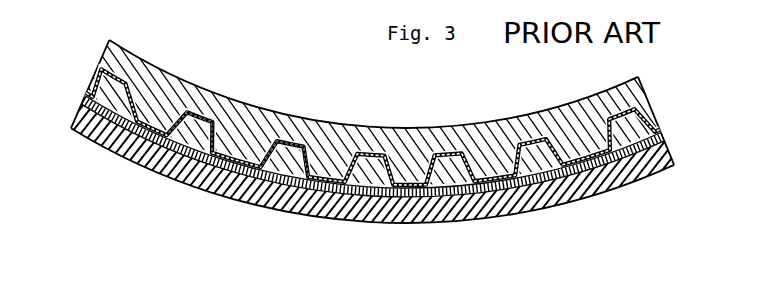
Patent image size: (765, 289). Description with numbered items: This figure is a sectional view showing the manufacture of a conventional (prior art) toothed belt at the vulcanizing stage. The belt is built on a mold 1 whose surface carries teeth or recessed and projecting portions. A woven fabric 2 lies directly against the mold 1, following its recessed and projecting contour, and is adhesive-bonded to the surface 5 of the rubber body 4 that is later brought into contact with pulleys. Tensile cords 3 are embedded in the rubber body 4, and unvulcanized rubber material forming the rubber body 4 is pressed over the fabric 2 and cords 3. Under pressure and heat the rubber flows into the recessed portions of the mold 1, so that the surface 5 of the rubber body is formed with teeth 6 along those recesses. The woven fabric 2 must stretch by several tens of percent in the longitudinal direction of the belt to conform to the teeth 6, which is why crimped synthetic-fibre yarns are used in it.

The mold 1 is at (522, 118).
The woven fabric 2 is at (220, 149).
The tensile cords 3 is at (322, 178).
The rubber body 4 is at (508, 198).
The surface 5 is at (405, 182).
The teeth 6 is at (285, 165).